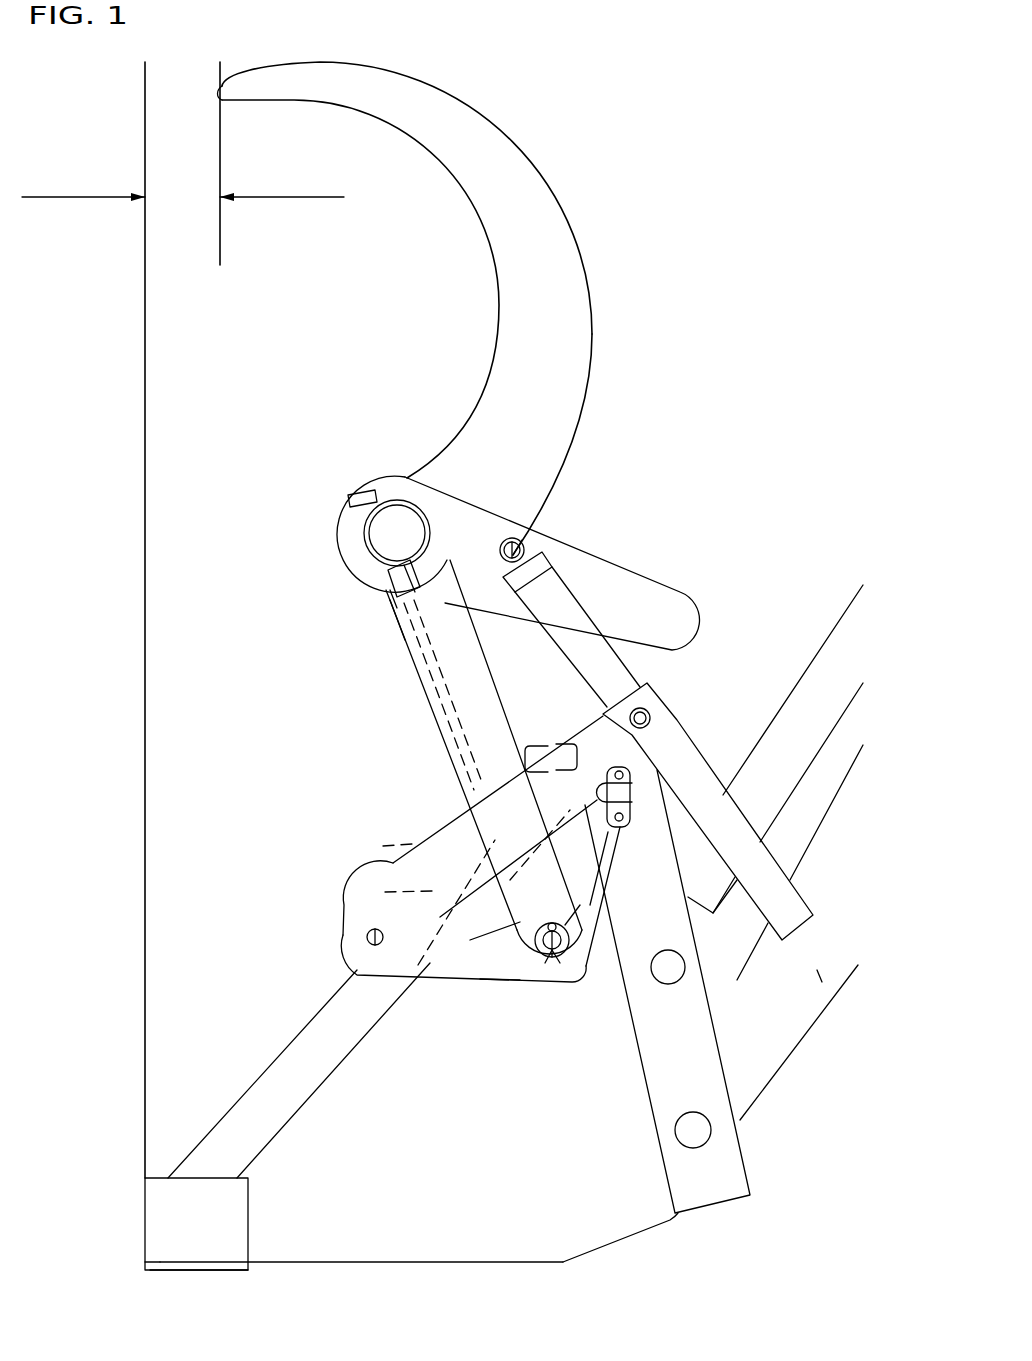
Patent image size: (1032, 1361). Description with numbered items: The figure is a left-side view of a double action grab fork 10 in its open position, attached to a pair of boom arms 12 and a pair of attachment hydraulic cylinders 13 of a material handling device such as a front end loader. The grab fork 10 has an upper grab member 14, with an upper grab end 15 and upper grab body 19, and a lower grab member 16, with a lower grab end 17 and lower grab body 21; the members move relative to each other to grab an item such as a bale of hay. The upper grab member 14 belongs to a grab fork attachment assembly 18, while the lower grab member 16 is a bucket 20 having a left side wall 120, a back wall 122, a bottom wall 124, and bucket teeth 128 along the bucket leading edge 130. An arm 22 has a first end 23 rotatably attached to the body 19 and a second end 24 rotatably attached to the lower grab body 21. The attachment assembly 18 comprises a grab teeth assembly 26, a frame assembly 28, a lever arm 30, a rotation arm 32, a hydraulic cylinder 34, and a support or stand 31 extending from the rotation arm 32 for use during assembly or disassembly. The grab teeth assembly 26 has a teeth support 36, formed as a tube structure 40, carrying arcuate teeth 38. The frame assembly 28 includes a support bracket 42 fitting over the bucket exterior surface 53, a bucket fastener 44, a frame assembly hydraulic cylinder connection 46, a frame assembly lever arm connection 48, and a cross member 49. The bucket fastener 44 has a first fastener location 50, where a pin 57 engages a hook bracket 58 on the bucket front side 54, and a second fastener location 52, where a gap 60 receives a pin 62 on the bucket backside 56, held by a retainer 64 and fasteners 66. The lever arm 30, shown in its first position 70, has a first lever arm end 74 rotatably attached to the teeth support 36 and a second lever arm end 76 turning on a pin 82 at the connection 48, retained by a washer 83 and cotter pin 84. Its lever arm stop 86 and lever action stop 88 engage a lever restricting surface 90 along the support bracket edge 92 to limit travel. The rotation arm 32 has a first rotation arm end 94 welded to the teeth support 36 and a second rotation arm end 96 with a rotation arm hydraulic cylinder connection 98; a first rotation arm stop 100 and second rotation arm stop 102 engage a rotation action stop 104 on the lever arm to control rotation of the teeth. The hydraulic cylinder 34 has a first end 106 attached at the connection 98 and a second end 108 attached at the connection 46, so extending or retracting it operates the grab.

The double action grab fork 10 is at (660, 530).
The boom arms 12 is at (820, 983).
The attachment hydraulic cylinders 13 is at (830, 678).
The upper grab member 14 is at (645, 218).
The upper grab end 15 is at (224, 92).
The lower grab member 16 is at (115, 940).
The lower grab end 17 is at (150, 1262).
The grab fork attachment assembly 18 is at (312, 665).
The upper grab body 19 is at (550, 428).
The bucket 20 is at (622, 1205).
The lower grab body 21 is at (375, 1062).
The arm 22 is at (417, 688).
The first end 23 is at (398, 638).
The second end 24 is at (497, 890).
The grab teeth assembly 26 is at (572, 328).
The frame assembly 28 is at (480, 978).
The lever arm 30 is at (467, 683).
The support or stand 31 is at (665, 605).
The rotation arm 32 is at (520, 540).
The hydraulic cylinder 34 is at (615, 672).
The teeth support 36 is at (392, 500).
The teeth 38 is at (535, 175).
The tube structure 40 is at (405, 503).
The support bracket 42 is at (515, 978).
The bucket fastener 44 is at (640, 812).
The frame assembly hydraulic cylinder connection 46 is at (663, 700).
The frame assembly lever arm connection 48 is at (570, 965).
The cross member 49 is at (540, 750).
The first fastener location 50 is at (318, 965).
The second fastener location 52 is at (640, 800).
The bucket exterior surface 53 is at (450, 1130).
The bucket front side 54 is at (285, 1045).
The bucket backside 56 is at (620, 965).
The pin 57 is at (380, 942).
The hook bracket 58 is at (362, 905).
The gap 60 is at (640, 790).
The pin 62 is at (608, 870).
The retainer 64 is at (610, 773).
The fasteners 66 is at (619, 772).
The first lever arm position 70 is at (330, 728).
The first lever arm end 74 is at (395, 590).
The second lever arm end 76 is at (520, 922).
The pin 82 is at (565, 950).
The washer 83 is at (562, 925).
The cotter pin 84 is at (548, 920).
The lever arm stop 86 is at (442, 713).
The lever action stop 88 is at (473, 783).
The lever restricting surface 90 is at (420, 850).
The support bracket edge 92 is at (440, 890).
The first rotation arm end 94 is at (345, 522).
The second rotation arm end 96 is at (530, 548).
The rotation arm hydraulic cylinder connection 98 is at (505, 555).
The first rotation arm stop 100 is at (420, 582).
The second rotation arm stop 102 is at (368, 498).
The rotation action stop 104 is at (395, 575).
The hydraulic cylinder first end 106 is at (545, 565).
The hydraulic cylinder second end 108 is at (650, 738).
The left side wall 120 is at (467, 1203).
The back wall 122 is at (650, 1100).
The bottom wall 124 is at (440, 1262).
The bucket teeth 128 is at (165, 1265).
The bucket leading edge 130 is at (150, 1265).